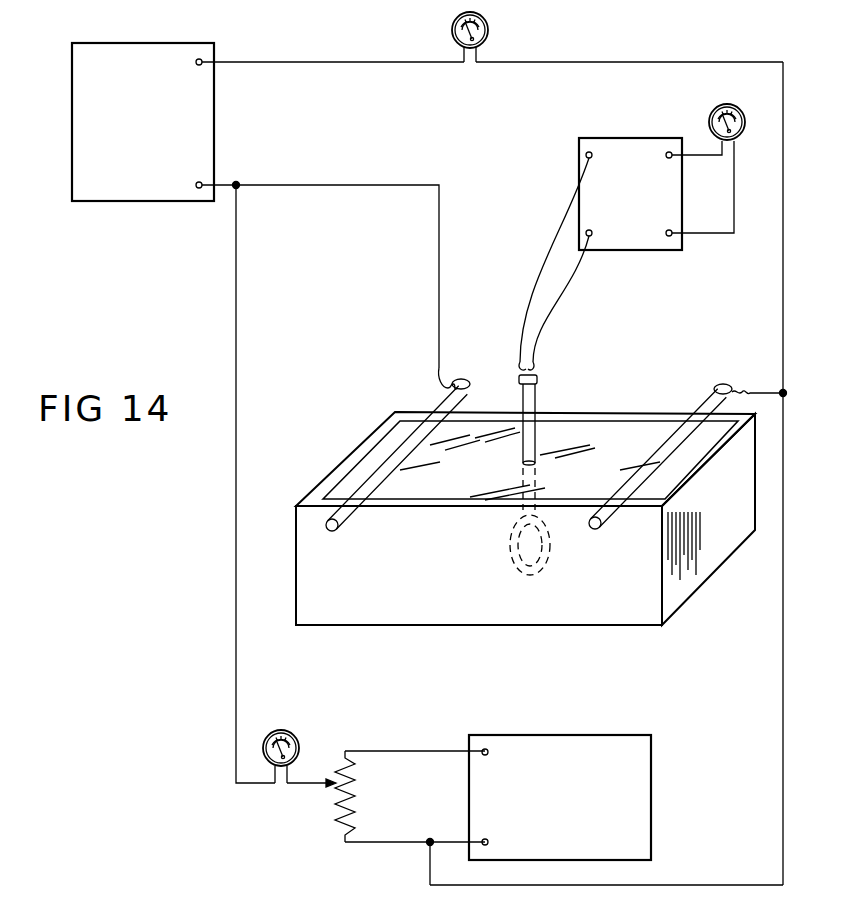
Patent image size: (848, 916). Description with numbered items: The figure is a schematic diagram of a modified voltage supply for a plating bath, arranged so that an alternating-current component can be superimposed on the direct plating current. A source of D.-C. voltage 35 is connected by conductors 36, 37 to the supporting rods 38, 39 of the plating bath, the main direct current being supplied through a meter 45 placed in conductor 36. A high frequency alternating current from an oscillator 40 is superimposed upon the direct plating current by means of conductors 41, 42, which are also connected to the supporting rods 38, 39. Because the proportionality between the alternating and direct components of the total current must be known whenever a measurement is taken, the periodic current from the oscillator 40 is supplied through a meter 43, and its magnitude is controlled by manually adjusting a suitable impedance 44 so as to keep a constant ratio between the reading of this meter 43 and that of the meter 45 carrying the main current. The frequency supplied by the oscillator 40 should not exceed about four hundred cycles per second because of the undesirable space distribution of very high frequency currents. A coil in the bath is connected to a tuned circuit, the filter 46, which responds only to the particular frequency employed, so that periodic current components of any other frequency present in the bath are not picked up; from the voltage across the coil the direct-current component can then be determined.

The source of D.-C. voltage 35 is at (210, 169).
The conductor 36 is at (318, 63).
The conductor 37 is at (362, 187).
The supporting rod 38 is at (612, 515).
The supporting rod 39 is at (350, 515).
The oscillator 40 is at (639, 830).
The conductor 41 is at (778, 646).
The conductor 42 is at (233, 536).
The meter 43 is at (292, 738).
The impedance 44 is at (355, 804).
The meter 45 is at (490, 33).
The filter 46 is at (628, 148).